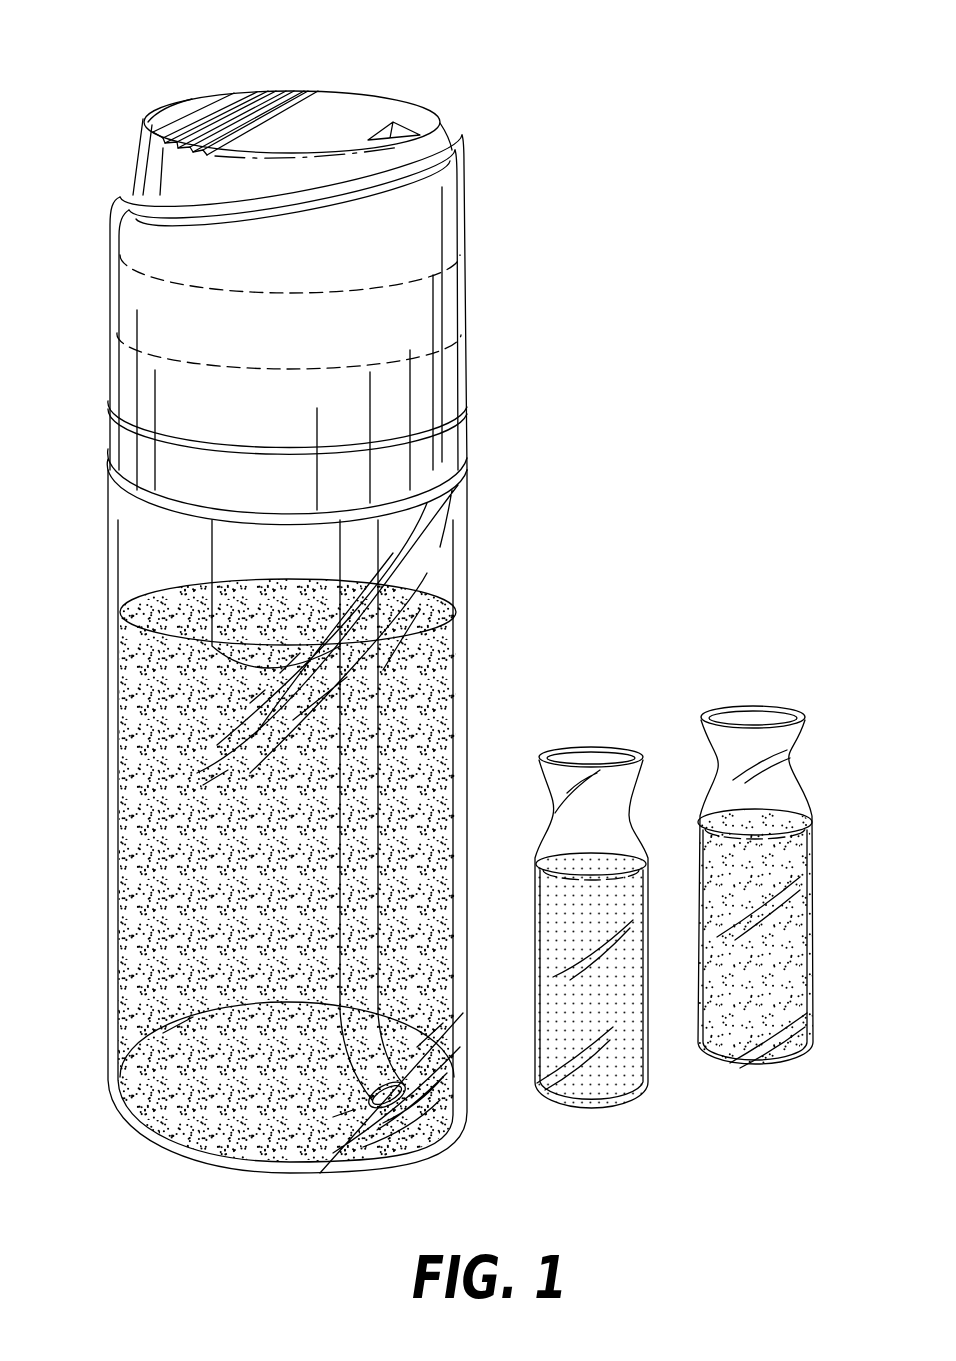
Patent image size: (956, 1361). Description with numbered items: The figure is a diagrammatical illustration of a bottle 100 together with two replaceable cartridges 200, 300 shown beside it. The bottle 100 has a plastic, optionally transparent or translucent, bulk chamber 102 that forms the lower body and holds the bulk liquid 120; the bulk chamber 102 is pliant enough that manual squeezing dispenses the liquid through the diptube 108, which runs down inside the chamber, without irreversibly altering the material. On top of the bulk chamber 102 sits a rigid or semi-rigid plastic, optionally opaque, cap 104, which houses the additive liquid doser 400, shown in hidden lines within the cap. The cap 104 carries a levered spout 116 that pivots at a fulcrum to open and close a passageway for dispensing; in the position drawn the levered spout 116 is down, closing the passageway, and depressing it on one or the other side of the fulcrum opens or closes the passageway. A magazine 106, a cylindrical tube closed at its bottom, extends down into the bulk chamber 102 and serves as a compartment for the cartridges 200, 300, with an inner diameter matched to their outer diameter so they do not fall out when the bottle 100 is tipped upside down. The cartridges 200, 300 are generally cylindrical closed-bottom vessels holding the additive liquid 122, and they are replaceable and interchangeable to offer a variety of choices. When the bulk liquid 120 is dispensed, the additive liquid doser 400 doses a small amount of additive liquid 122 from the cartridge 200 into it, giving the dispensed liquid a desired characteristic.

The bottle 100 is at (457, 84).
The bulk chamber 102 is at (107, 753).
The cap 104 is at (468, 193).
The magazine 106 is at (217, 572).
The diptube 108 is at (378, 777).
The levered spout 116 is at (179, 102).
The bulk liquid 120 is at (248, 889).
The additive liquid 122 is at (608, 1012).
The cartridge 200 is at (607, 730).
The cartridge 300 is at (770, 693).
The additive liquid doser 400 is at (453, 303).